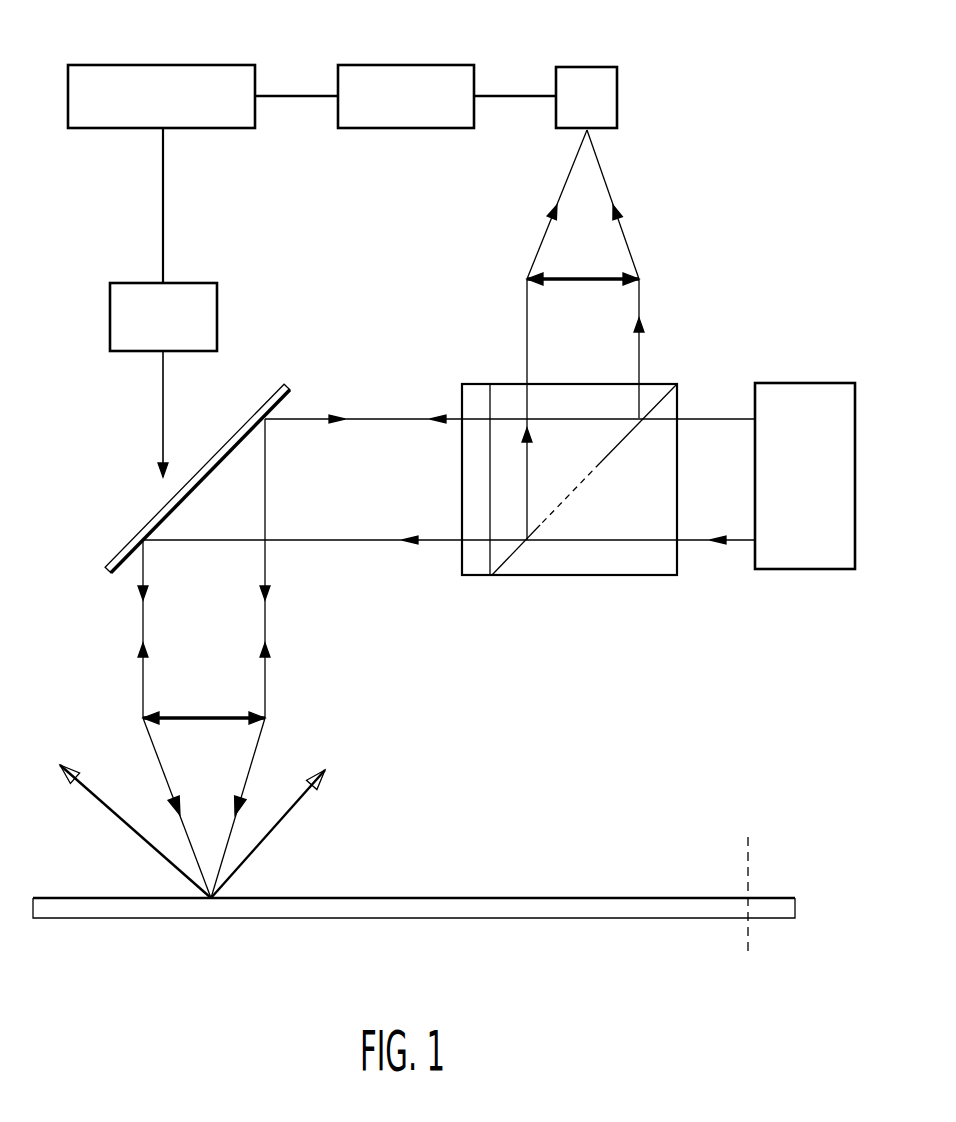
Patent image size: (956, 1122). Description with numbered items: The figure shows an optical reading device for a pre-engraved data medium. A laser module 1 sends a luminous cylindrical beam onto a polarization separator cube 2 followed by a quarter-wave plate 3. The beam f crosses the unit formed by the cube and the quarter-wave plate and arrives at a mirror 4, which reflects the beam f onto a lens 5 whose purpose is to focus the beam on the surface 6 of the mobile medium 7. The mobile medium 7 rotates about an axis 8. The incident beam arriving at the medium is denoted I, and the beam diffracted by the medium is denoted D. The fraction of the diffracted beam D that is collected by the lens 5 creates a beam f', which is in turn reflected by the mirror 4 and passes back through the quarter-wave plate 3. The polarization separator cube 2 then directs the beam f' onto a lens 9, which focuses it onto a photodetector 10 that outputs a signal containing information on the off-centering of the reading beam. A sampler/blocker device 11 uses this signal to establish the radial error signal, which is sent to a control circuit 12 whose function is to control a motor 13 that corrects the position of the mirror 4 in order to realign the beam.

The laser module 1 is at (800, 383).
The polarization separator cube 2 is at (652, 574).
The quarter-wave plate 3 is at (475, 390).
The mirror 4 is at (115, 553).
The lens 5 is at (195, 716).
The surface 6 is at (135, 897).
The mobile medium 7 is at (155, 907).
The axis 8 is at (750, 868).
The lens 9 is at (597, 276).
The photodetector 10 is at (594, 80).
The sampler/blocker device 11 is at (383, 78).
The control circuit 12 is at (168, 80).
The motor 13 is at (128, 293).
The beam f is at (449, 442).
The beam f' is at (231, 568).
The incident beam I is at (202, 808).
The diffracted beam D is at (200, 831).